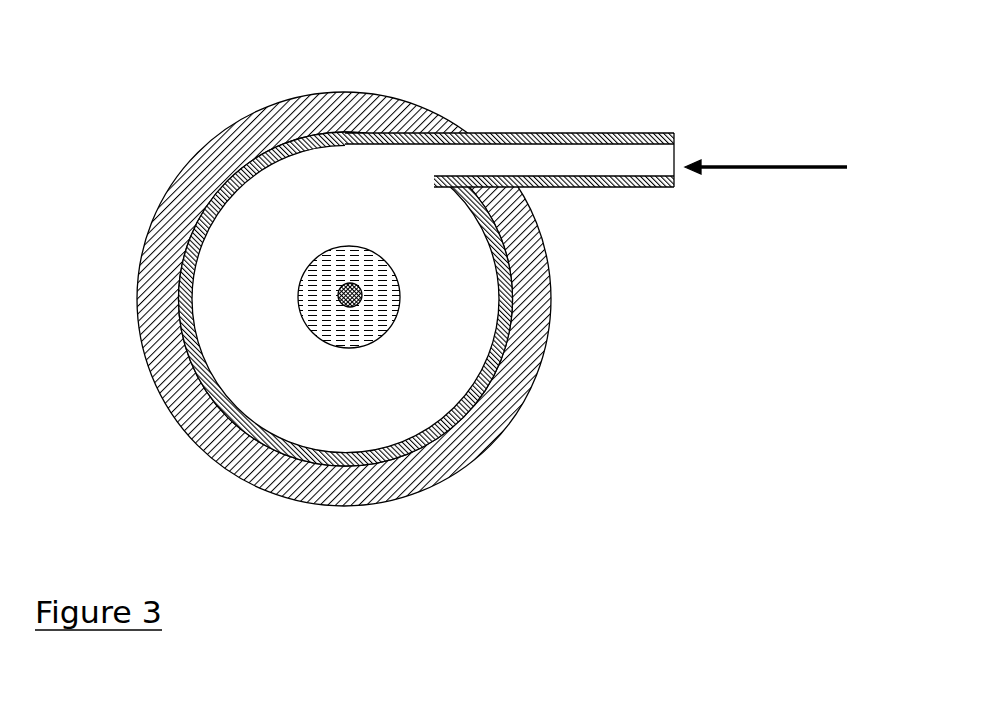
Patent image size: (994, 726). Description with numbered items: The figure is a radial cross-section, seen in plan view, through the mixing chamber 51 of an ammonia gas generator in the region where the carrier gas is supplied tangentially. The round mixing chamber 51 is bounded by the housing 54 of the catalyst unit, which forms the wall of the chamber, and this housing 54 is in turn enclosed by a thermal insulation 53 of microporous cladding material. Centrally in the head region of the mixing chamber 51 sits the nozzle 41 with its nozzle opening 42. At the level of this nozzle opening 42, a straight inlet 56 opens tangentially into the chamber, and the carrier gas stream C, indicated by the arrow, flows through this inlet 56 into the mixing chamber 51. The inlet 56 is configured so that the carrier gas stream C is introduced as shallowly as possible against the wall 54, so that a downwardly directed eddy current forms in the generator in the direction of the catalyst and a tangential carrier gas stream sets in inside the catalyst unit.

The nozzle 41 is at (370, 328).
The nozzle opening 42 is at (362, 293).
The mixing chamber 51 is at (313, 408).
The thermal insulation 53 is at (153, 282).
The housing 54 is at (197, 220).
The inlet 56 is at (526, 167).
The carrier gas stream C is at (766, 147).